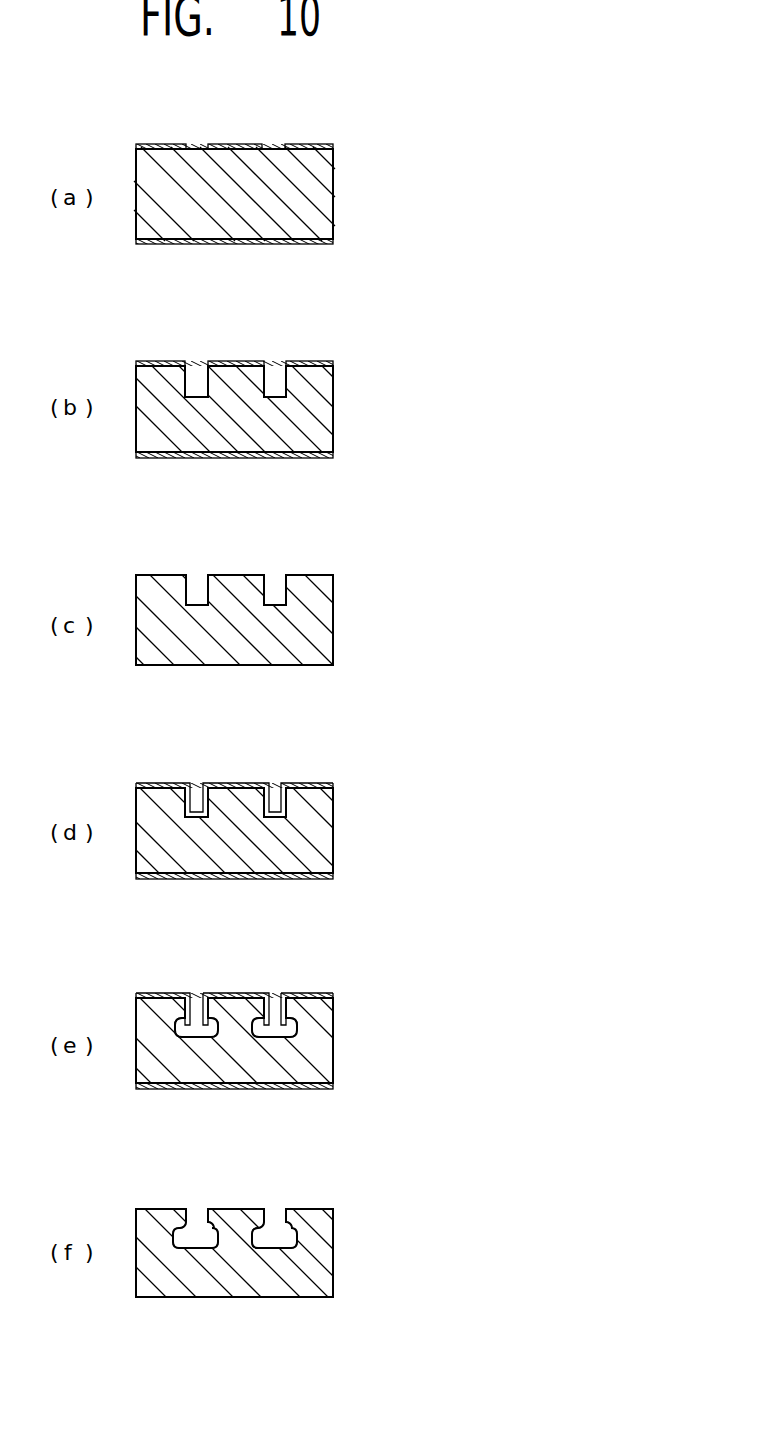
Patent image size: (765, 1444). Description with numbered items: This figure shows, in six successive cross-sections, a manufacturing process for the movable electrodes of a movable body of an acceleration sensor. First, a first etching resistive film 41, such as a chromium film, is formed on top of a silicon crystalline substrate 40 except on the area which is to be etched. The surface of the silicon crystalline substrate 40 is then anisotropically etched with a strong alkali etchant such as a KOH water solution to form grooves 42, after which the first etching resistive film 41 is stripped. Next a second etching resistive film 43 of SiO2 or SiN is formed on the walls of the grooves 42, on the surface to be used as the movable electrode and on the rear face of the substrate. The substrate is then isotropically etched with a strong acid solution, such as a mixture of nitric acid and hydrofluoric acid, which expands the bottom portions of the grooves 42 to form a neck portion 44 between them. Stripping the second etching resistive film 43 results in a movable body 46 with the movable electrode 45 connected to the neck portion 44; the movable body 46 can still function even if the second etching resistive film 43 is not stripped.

The silicon crystalline substrate 40 is at (306, 166).
The first etching resistive film 41 is at (157, 145).
The grooves 42 is at (274, 388).
The second etching resistive film 43 is at (160, 783).
The neck portion 44 is at (230, 1032).
The movable electrode 45 is at (240, 1209).
The movable body 46 is at (308, 1229).